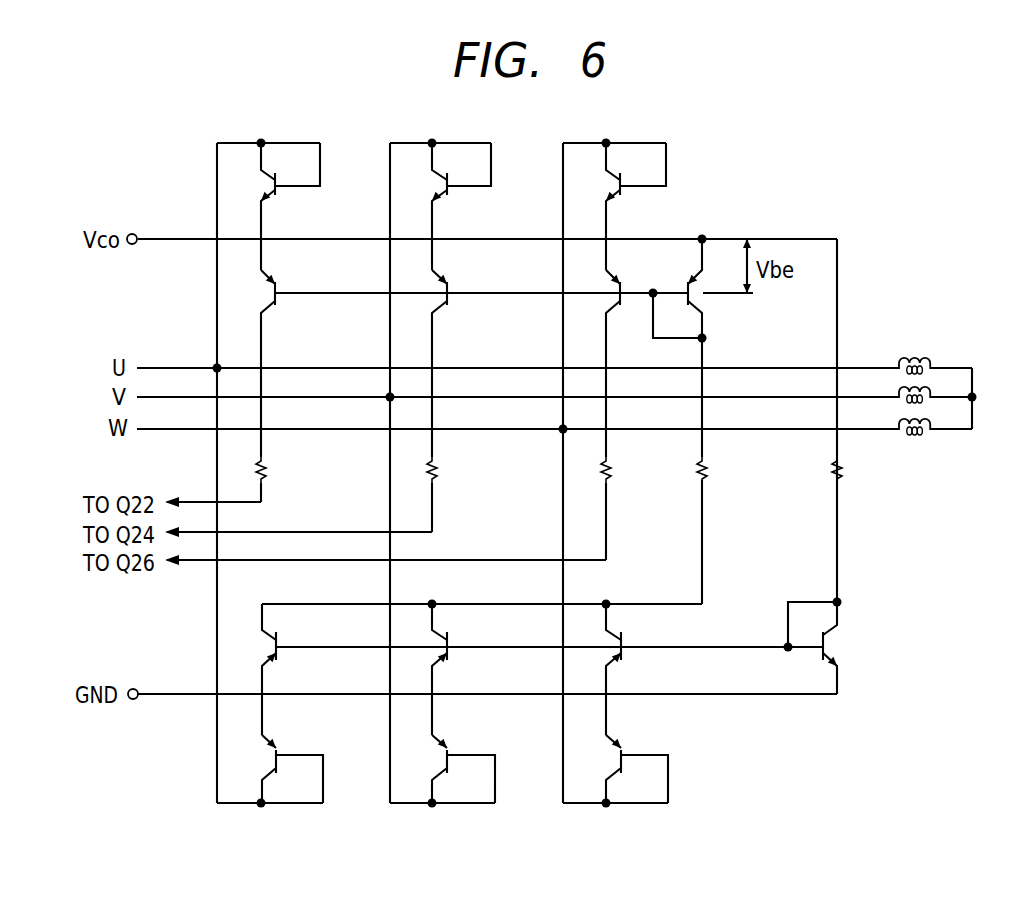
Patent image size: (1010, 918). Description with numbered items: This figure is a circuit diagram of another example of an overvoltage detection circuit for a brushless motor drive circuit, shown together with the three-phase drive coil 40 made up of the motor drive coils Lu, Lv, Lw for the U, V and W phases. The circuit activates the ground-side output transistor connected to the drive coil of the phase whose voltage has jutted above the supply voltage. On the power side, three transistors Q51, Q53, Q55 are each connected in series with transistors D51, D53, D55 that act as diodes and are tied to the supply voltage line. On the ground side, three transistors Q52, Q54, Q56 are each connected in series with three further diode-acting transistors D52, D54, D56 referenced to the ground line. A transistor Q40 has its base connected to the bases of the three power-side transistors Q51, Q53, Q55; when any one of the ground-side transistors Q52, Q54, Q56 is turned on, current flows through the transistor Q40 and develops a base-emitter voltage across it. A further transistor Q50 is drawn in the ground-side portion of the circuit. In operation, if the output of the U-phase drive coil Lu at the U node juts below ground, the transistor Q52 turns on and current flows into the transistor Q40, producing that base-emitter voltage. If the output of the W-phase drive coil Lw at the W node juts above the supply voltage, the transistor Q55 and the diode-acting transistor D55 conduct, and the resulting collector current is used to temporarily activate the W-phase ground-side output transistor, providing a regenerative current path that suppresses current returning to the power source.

The drive coil 40 is at (940, 360).
The power-side transistor Q51 is at (285, 386).
The power-side transistor Q53 is at (456, 401).
The power-side transistor Q55 is at (624, 415).
The transistor Q40 is at (696, 361).
The ground-side transistor Q52 is at (288, 669).
The ground-side transistor Q54 is at (459, 669).
The ground-side transistor Q56 is at (632, 669).
The transistor Q50 is at (833, 575).
The diode-acting transistor D51 is at (289, 206).
The diode-acting transistor D53 is at (460, 206).
The diode-acting transistor D55 is at (634, 206).
The diode-acting transistor D52 is at (292, 764).
The diode-acting transistor D54 is at (463, 764).
The diode-acting transistor D56 is at (637, 764).
The motor drive coil Lu is at (932, 360).
The motor drive coil Lv is at (932, 389).
The motor drive coil Lw is at (932, 421).